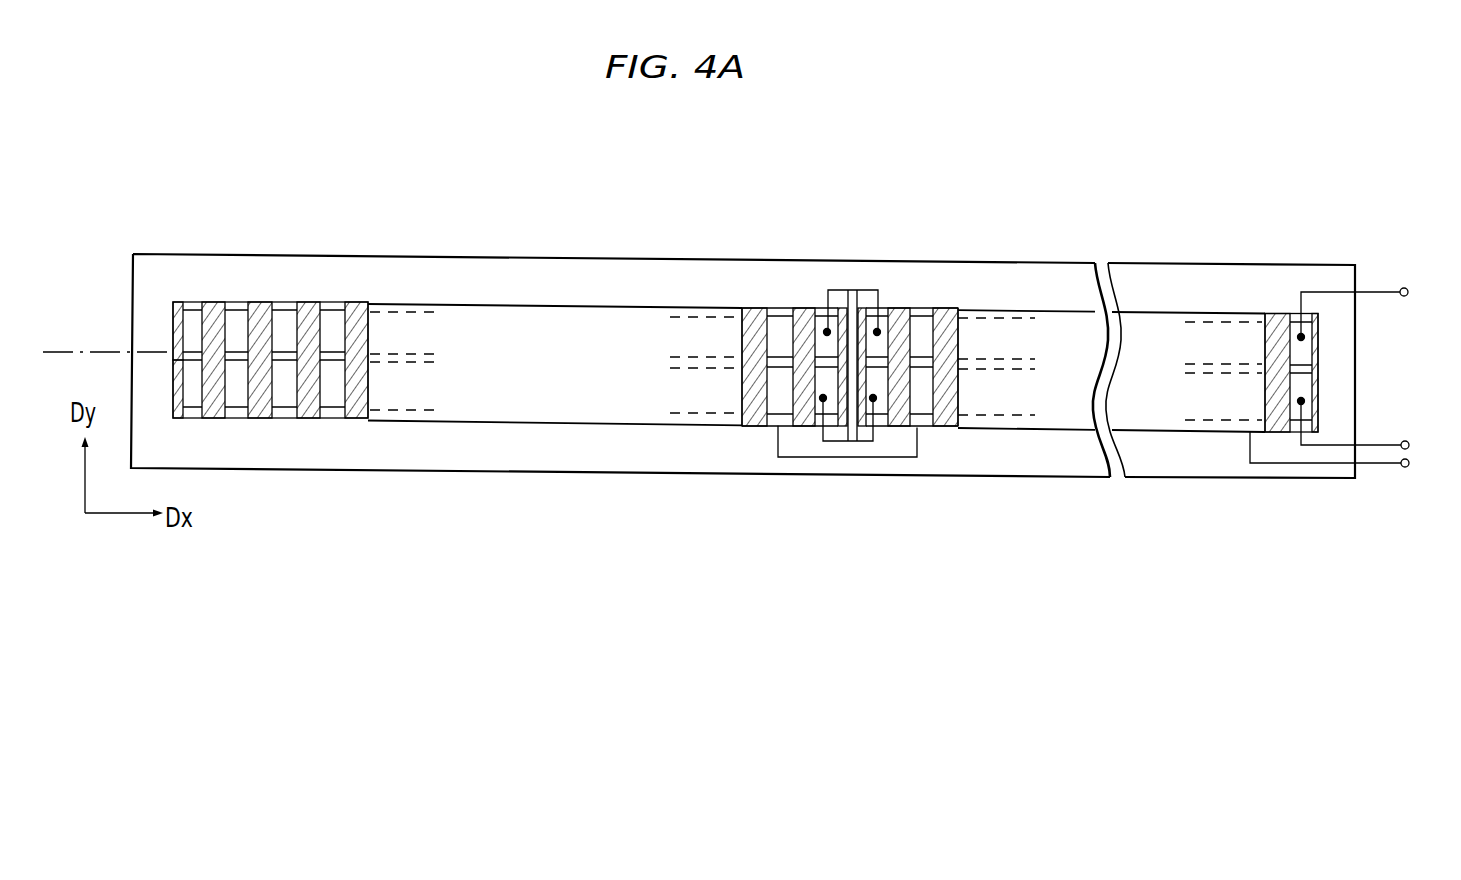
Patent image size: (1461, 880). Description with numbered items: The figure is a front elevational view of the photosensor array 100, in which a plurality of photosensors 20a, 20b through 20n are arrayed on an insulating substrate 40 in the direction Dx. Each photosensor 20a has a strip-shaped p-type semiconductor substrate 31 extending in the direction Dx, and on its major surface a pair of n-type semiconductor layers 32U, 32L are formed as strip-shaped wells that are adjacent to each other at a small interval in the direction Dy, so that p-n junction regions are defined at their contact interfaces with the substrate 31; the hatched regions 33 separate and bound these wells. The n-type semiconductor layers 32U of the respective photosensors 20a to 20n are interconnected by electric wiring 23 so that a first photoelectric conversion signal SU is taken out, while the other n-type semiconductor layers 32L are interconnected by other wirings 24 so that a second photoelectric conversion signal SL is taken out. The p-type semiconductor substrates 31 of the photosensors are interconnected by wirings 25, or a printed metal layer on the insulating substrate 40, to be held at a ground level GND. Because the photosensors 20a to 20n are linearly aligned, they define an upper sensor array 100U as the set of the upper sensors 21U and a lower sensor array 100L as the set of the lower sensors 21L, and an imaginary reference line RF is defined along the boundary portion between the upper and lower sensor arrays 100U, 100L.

The photosensor array 100 is at (743, 311).
The upper sensor array 100U is at (167, 315).
The lower sensor array 100L is at (175, 398).
The piezoelectric elements 33 is at (267, 303).
The n-type semiconductor layer 32U is at (328, 322).
The upper sensor 21U is at (658, 264).
The n-type semiconductor layer 32L is at (332, 400).
The lower sensor 21L is at (645, 449).
The upper connecting conductor 23 is at (838, 288).
The wirings 24 is at (848, 441).
The wirings 25 is at (800, 458).
The p-type semiconductor substrate 31 is at (737, 423).
The insulating substrate 40 is at (1030, 268).
The photosensor 20a is at (530, 428).
The photosensor 20b is at (1090, 435).
The photosensor 20n is at (1210, 435).
The reference line RF is at (90, 352).
The first photoelectric conversion signal SU is at (1395, 258).
The second photoelectric conversion signal SL is at (1397, 423).
The ground level GND is at (1396, 494).